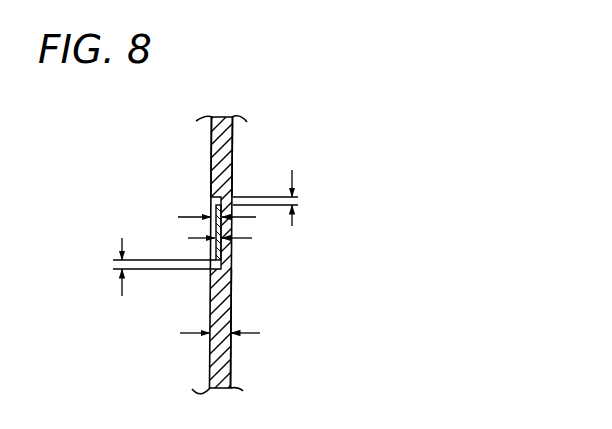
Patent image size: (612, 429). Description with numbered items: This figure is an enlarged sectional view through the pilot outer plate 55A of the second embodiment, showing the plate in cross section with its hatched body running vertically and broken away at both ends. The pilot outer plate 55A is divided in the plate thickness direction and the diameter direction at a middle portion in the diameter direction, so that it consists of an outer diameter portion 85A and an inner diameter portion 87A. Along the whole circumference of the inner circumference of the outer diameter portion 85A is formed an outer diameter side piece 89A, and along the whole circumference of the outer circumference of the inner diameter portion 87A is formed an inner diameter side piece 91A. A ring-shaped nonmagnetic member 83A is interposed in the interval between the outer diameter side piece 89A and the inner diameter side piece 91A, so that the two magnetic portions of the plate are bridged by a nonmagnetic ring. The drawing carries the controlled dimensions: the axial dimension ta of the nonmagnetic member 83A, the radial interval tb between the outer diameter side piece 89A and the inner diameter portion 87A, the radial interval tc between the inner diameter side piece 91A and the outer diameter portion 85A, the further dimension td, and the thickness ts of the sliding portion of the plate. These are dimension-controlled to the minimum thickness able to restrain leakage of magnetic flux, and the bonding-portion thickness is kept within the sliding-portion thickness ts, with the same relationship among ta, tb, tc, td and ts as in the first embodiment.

The pilot outer plate 55A is at (245, 160).
The nonmagnetic member 83A is at (211, 168).
The outer diameter portion 85A is at (231, 371).
The inner diameter portion 87A is at (234, 140).
The outer diameter side piece 89A is at (221, 257).
The inner diameter side piece 91A is at (208, 248).
The dimension in the axial direction of the nonmagnetic member ta is at (233, 240).
The dimension of the interval between the outer diameter side piece and the inner di tb is at (278, 201).
The dimension of the interval between the inner diameter piece and the outer diamete tc is at (154, 267).
The dimension td is at (208, 216).
The thickness dimension of the sliding portion ts is at (230, 336).